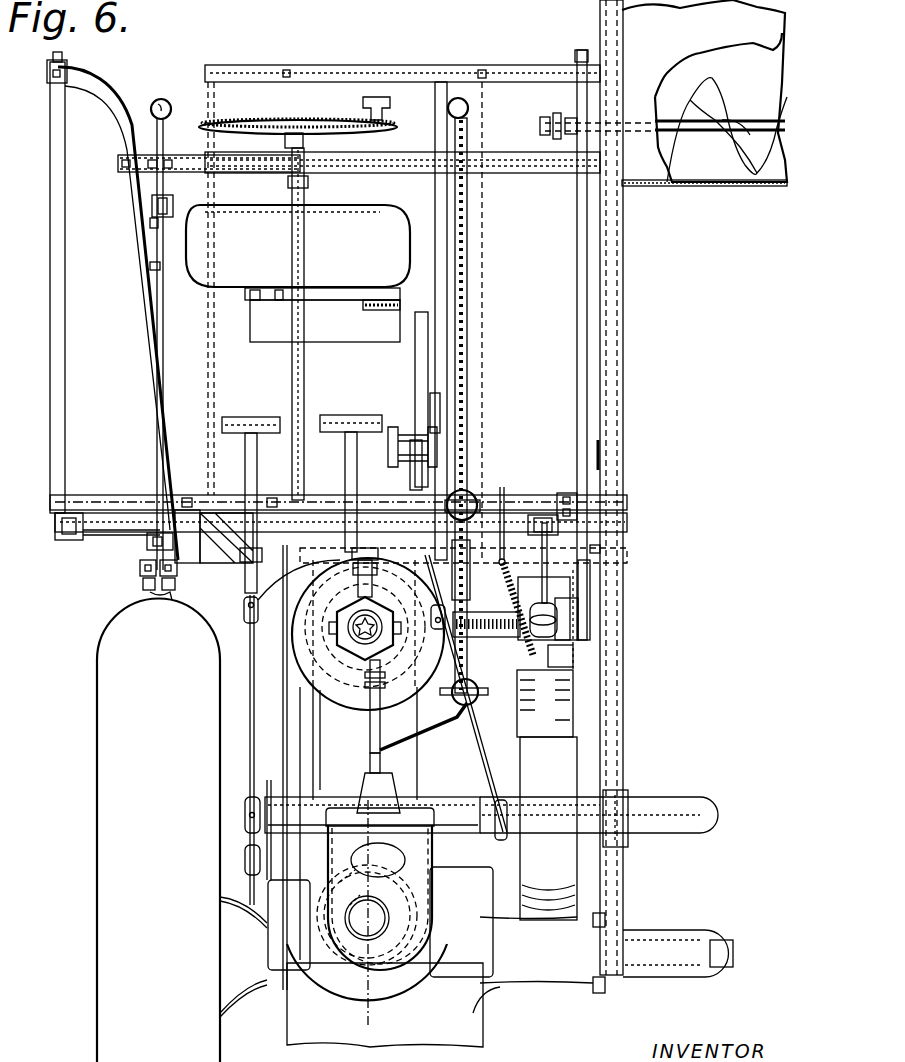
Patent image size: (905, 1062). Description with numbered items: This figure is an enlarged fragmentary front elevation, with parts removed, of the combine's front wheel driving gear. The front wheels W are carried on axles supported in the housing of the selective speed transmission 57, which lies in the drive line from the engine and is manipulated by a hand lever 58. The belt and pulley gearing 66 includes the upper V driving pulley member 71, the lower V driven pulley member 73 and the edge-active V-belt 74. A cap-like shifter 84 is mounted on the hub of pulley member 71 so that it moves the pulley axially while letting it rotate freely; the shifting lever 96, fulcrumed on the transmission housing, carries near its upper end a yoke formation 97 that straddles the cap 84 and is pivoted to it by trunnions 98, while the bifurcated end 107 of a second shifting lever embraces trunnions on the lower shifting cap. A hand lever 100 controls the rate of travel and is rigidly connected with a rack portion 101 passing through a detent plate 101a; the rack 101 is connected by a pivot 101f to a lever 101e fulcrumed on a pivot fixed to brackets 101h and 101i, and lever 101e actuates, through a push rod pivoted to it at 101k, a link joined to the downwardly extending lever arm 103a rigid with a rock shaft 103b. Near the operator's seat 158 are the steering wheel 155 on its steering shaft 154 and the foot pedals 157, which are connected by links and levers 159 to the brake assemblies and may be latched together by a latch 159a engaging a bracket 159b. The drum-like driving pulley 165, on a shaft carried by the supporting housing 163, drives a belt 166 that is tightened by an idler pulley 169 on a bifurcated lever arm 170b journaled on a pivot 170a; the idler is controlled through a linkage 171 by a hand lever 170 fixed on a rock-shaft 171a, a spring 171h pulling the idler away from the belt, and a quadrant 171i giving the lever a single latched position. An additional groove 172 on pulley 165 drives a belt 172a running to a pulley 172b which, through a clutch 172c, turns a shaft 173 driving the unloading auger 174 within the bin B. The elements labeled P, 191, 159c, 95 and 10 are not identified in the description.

The frame post P is at (616, 401).
The rack portion 101 is at (160, 201).
The hand lever 100 is at (158, 98).
The pivot 101f is at (147, 200).
The detent plate 101a is at (153, 223).
The lever 101e is at (155, 265).
The pivot 101k is at (150, 540).
The rock shaft 103b is at (117, 527).
The bracket 101h is at (143, 550).
The bracket 101i is at (163, 600).
The steering wheel 155 is at (288, 122).
The steering shaft 154 is at (302, 388).
The seat 158 is at (360, 230).
The foot pedals 157 is at (227, 415).
The bracket 191 is at (392, 430).
The hand lever 170 is at (447, 287).
The quadrant 171i is at (443, 443).
The pulley 172b is at (573, 62).
The clutch 172c is at (553, 113).
The bin B is at (688, 186).
The shaft 173 is at (660, 123).
The unloading auger 174 is at (760, 153).
The rock-shaft 171a is at (520, 530).
The belt 172a is at (600, 455).
The spring 171h is at (600, 548).
The driving pulley 165 is at (600, 583).
The additional groove 172 is at (593, 610).
The pivot 170a is at (567, 625).
The bifurcated lever arm 170b is at (577, 650).
The linkage 171 is at (560, 660).
The supporting housing 163 is at (465, 640).
The links and levers 159 is at (490, 783).
The latch 159a is at (248, 606).
The bracket 159b is at (243, 562).
The link 159c is at (248, 622).
The front wheels W is at (96, 809).
The upper V driving pulley member 71 is at (340, 692).
The shifter 84 is at (370, 607).
The trunnions 98 is at (320, 631).
The clamp 95 is at (398, 628).
The lever arm 103a is at (353, 570).
The shifting lever 96 is at (377, 737).
The hand lever 58 is at (447, 727).
The selective speed transmission 57 is at (359, 791).
The belt and pulley gearing 66 is at (319, 764).
The yoke formation 97 is at (298, 663).
The V-belt 74 is at (300, 742).
The idler pulley 169 is at (540, 697).
The belt 166 is at (560, 740).
The bifurcated end 107 is at (430, 858).
The housing 10 is at (350, 828).
The lower V driven pulley member 73 is at (410, 980).